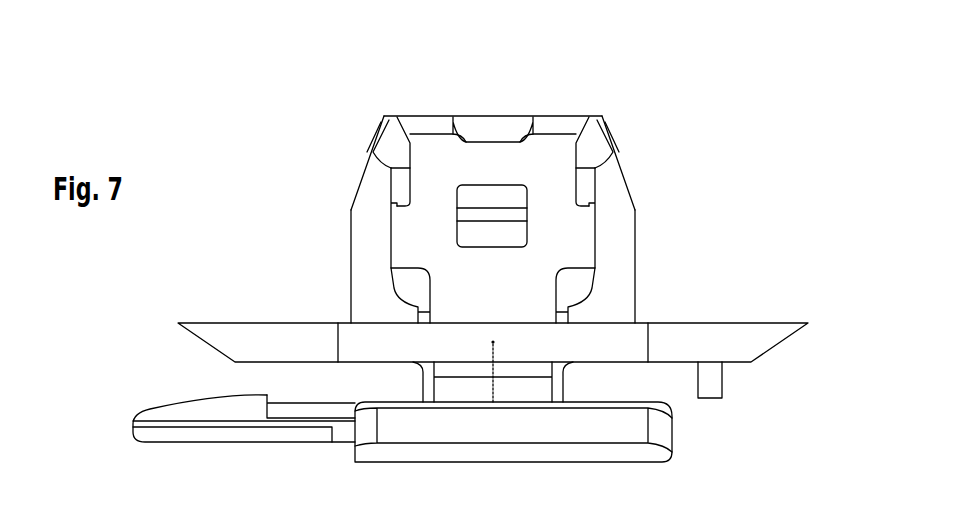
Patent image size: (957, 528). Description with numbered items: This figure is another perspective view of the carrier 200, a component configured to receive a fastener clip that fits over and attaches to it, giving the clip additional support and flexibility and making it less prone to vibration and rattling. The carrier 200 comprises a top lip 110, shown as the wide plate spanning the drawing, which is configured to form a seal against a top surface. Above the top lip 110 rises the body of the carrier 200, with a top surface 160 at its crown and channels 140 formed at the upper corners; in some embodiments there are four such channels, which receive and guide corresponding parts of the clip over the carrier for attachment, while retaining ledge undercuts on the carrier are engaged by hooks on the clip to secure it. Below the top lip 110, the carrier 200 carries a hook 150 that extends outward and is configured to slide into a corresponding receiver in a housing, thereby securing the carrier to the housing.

The carrier 200 is at (200, 101).
The top lip 110 is at (708, 322).
The channels 140 is at (410, 177).
The hook 150 is at (222, 400).
The top surface 160 is at (483, 135).